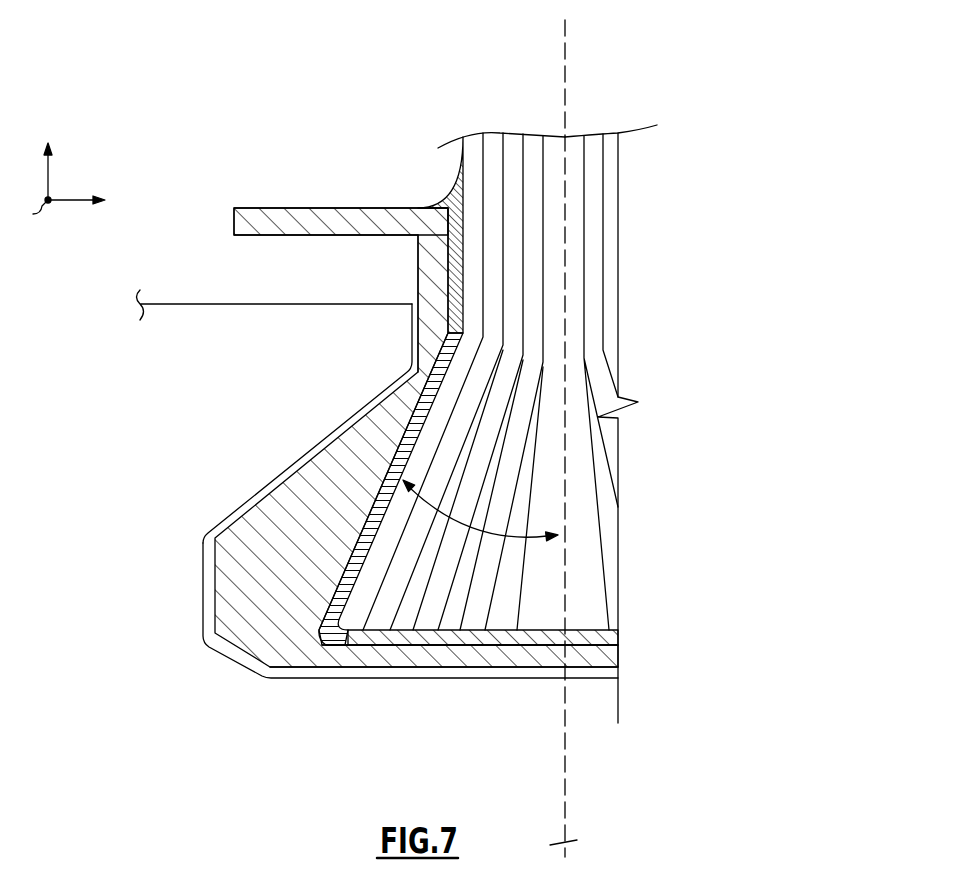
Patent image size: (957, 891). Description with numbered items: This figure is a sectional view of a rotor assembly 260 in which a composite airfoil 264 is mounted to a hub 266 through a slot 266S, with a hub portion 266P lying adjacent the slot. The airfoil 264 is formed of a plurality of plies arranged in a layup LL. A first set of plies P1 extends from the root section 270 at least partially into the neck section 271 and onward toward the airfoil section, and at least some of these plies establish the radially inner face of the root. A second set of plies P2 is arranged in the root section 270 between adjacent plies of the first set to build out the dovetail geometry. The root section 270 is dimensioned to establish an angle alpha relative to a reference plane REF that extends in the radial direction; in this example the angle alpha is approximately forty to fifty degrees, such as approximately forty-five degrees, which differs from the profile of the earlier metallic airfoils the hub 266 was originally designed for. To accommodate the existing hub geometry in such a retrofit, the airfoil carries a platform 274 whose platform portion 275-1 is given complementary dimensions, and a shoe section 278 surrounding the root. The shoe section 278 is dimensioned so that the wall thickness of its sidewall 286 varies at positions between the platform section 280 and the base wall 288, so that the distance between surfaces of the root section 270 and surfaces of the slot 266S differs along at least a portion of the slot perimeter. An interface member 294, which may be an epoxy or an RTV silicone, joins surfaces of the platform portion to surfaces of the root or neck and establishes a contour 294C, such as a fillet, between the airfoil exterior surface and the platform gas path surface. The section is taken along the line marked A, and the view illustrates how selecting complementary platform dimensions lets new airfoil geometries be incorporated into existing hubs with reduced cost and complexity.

The rotor assembly 260 is at (220, 132).
The airfoil 264 is at (582, 135).
The hub 266 is at (240, 304).
The hub portion 266P is at (275, 305).
The slot 266S is at (502, 613).
The root section 270 is at (606, 525).
The neck section 271 is at (605, 287).
The platform 274 is at (340, 196).
The platform portion 275-1 is at (318, 206).
The shoe section 278 is at (364, 446).
The platform section 280 is at (622, 650).
The sidewall 286 is at (318, 474).
The base wall 288 is at (420, 653).
The interface member 294 is at (345, 640).
The contour 294C is at (452, 190).
The first set of plies P1 is at (555, 143).
The second set of plies P2 is at (403, 622).
The layup LL is at (622, 124).
The reference plane REF is at (566, 45).
The angle alpha is at (413, 520).
The section indicator A is at (577, 841).